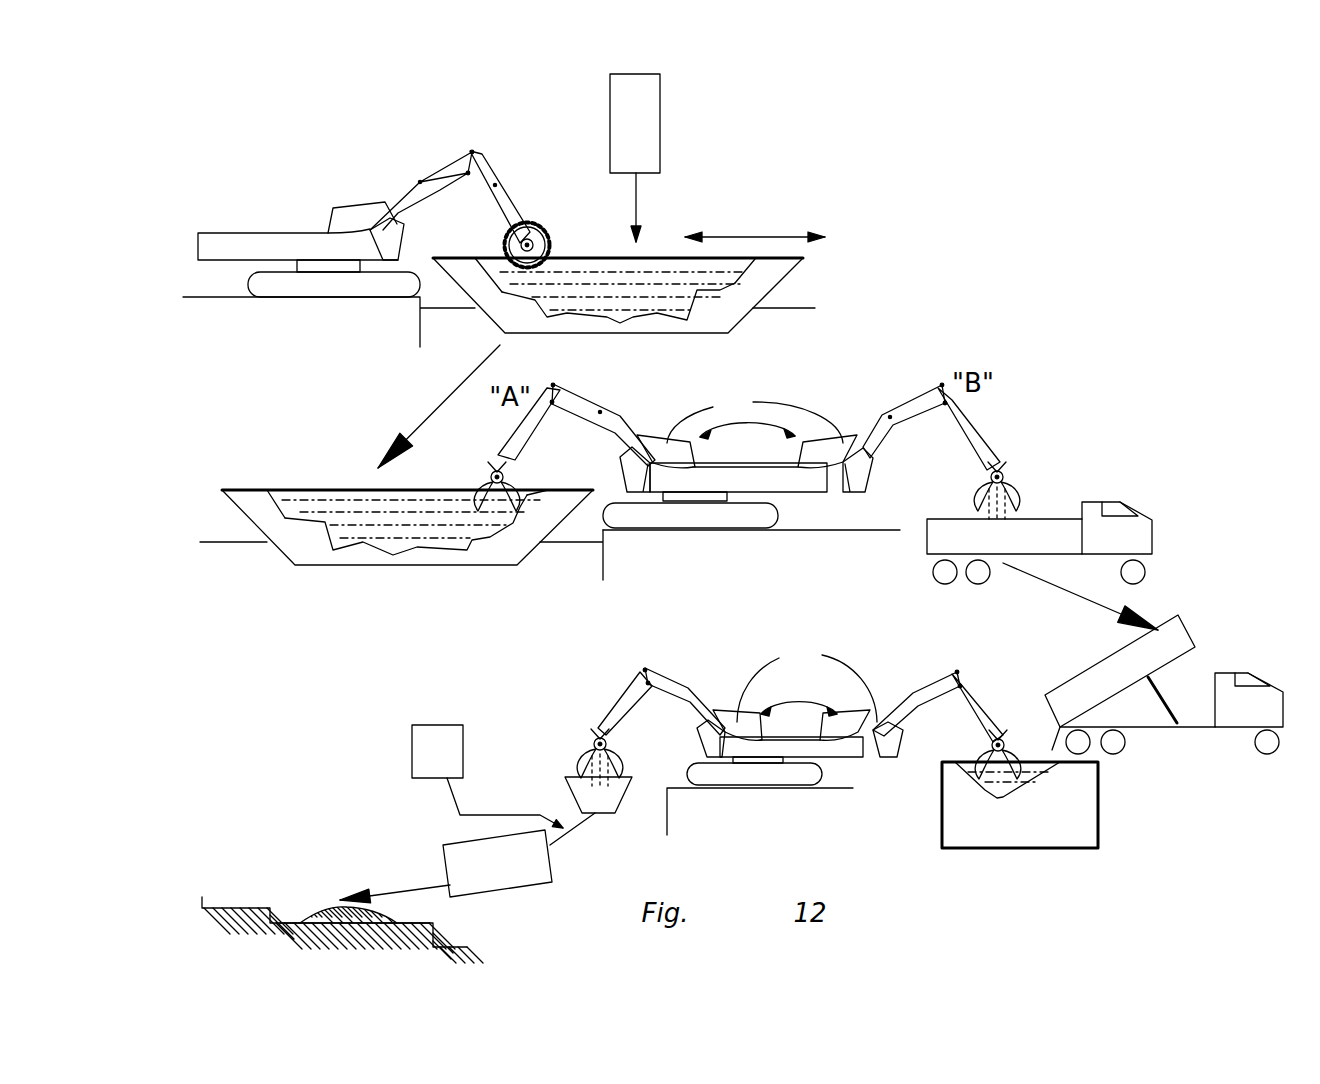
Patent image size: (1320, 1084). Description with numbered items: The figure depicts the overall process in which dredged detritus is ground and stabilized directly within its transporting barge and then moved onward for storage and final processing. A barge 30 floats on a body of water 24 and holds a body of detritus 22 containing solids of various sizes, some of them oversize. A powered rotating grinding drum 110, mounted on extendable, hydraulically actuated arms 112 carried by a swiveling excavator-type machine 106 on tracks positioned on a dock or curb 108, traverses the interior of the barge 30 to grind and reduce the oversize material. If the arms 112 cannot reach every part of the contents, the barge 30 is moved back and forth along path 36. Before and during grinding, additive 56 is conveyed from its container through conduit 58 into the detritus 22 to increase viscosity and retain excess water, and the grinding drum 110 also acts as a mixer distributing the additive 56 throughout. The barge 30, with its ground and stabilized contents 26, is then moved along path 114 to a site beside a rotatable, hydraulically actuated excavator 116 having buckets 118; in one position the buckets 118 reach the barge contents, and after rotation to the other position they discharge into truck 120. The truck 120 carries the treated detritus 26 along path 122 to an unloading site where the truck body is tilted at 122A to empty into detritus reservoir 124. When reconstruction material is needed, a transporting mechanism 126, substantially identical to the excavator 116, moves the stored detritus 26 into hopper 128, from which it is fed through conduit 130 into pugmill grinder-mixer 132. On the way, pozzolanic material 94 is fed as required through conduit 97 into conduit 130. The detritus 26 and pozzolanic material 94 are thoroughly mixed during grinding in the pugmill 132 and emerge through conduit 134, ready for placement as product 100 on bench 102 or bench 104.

The detritus 22 is at (617, 297).
The body of water 24 is at (797, 308).
The ground and stabilized contents 26 is at (353, 513).
The barge 30 is at (797, 263).
The path 36 is at (743, 235).
The additive 56 is at (622, 133).
The conduit 58 is at (637, 207).
The pozzolanic material 94 is at (420, 762).
The conduit 97 is at (480, 815).
The product 100 is at (313, 907).
The bench 102 is at (217, 907).
The bench 104 is at (413, 923).
The excavator 106 is at (307, 233).
The dock or curb 108 is at (329, 322).
The grinding drum 110 is at (548, 227).
The arms 112 is at (490, 208).
The path 114 is at (448, 395).
The excavator 116 is at (748, 456).
The buckets 118 is at (517, 480).
The truck 120 is at (1032, 515).
The path 122 is at (1090, 602).
The tilting of truck body 122A is at (1127, 673).
The detritus reservoir 124 is at (1020, 805).
The transporting mechanism 126 is at (802, 741).
The hopper 128 is at (622, 803).
The conduit 130 is at (586, 816).
The pugmill grinder-mixer 132 is at (540, 862).
The conduit 134 is at (413, 887).